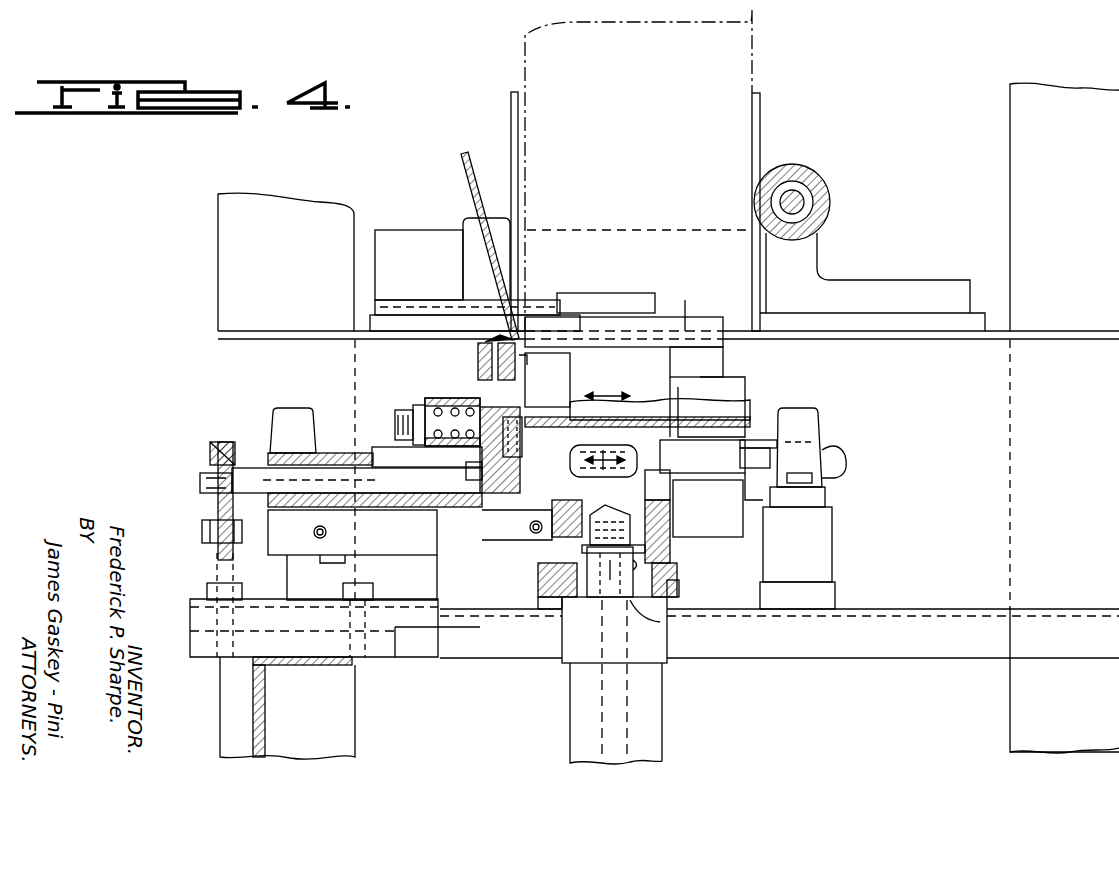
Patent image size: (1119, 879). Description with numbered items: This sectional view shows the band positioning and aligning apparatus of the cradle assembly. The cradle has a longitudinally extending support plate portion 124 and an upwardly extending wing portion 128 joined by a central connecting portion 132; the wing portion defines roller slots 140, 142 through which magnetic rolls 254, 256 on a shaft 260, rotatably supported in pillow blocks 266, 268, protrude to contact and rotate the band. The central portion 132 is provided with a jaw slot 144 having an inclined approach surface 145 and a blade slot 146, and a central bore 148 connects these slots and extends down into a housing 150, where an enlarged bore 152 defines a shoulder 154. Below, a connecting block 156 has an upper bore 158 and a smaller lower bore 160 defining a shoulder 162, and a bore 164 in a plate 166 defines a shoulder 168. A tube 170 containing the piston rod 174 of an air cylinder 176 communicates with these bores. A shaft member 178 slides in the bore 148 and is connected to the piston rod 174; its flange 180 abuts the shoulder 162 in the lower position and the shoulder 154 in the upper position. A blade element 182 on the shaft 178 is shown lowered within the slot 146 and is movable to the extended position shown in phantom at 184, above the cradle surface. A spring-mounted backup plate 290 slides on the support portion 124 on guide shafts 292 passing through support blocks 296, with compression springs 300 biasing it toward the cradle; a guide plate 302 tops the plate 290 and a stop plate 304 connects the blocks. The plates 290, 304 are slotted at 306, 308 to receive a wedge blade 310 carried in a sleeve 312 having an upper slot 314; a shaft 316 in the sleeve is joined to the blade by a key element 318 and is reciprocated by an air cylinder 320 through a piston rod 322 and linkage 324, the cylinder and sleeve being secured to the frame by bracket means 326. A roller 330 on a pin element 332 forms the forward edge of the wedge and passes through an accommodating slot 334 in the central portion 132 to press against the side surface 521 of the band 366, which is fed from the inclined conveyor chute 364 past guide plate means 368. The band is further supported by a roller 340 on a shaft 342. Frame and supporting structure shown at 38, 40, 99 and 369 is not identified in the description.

The base 38 is at (1028, 703).
The frame 40 is at (338, 742).
The pin 99 is at (268, 665).
The longitudinally extending support plate portion 124 is at (383, 443).
The wing portion 128 is at (627, 298).
The central connecting portion 132 is at (745, 452).
The roller slot 140 is at (673, 373).
The roller slot 142 is at (552, 405).
The jaw slot 144 is at (750, 493).
The inclined approach surface 145 is at (660, 515).
The blade slot 146 is at (517, 437).
The central bore 148 is at (663, 457).
The housing 150 is at (665, 518).
The enlarged bore 152 is at (580, 532).
The shoulder 154 is at (545, 520).
The connecting block 156 is at (665, 562).
The upper bore 158 is at (577, 543).
The lower smaller bore 160 is at (673, 582).
The shoulder 162 is at (567, 600).
The bore 164 is at (577, 598).
The plate 166 is at (670, 575).
The shoulder 168 is at (543, 567).
The tube 170 is at (650, 705).
The piston rod 174 is at (603, 707).
The air cylinder 176 is at (645, 597).
The shaft member 178 is at (647, 510).
The flange 180 is at (575, 552).
The blade element 182 is at (650, 423).
The extended position of blade 184 is at (738, 378).
The roller element 254 is at (753, 433).
The roller element 256 is at (458, 395).
The shaft 260 is at (832, 445).
The pillow block 266 is at (821, 532).
The pillow block 268 is at (280, 417).
The backup plate 290 is at (523, 358).
The guide shaft 292 is at (393, 417).
The support block 296 is at (423, 400).
The compression spring means 300 is at (463, 395).
The guide plate 302 is at (466, 176).
The stop plate 304 is at (487, 340).
The slot 306 is at (520, 388).
The slot 308 is at (606, 302).
The wedge blade 310 is at (480, 478).
The sleeve 312 is at (352, 503).
The slot 314 is at (380, 498).
The shaft 316 is at (287, 472).
The key element 318 is at (457, 467).
The air cylinder 320 is at (400, 557).
The piston rod 322 is at (240, 548).
The linkage 324 is at (212, 500).
The bracket means 326 is at (280, 593).
The roller 330 is at (540, 432).
The pin element 332 is at (480, 423).
The accommodating slot 334 is at (508, 467).
The roller 340 is at (814, 176).
The shaft 342 is at (800, 208).
The inclined conveyor chute 364 is at (690, 330).
The band 366 is at (783, 326).
The guide plate means 368 is at (752, 107).
The rod 369 is at (519, 127).
The side surface 521 is at (527, 222).